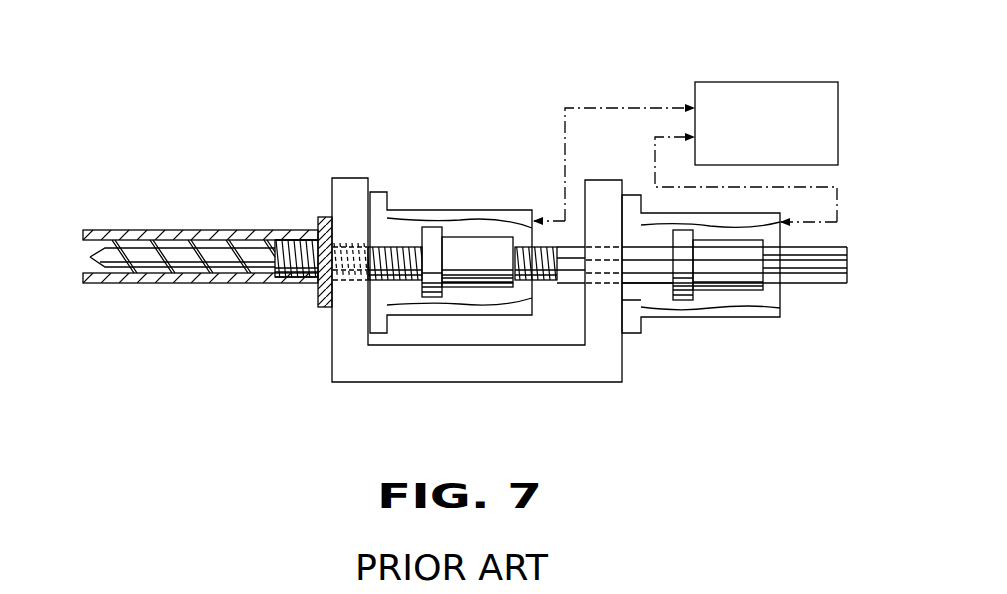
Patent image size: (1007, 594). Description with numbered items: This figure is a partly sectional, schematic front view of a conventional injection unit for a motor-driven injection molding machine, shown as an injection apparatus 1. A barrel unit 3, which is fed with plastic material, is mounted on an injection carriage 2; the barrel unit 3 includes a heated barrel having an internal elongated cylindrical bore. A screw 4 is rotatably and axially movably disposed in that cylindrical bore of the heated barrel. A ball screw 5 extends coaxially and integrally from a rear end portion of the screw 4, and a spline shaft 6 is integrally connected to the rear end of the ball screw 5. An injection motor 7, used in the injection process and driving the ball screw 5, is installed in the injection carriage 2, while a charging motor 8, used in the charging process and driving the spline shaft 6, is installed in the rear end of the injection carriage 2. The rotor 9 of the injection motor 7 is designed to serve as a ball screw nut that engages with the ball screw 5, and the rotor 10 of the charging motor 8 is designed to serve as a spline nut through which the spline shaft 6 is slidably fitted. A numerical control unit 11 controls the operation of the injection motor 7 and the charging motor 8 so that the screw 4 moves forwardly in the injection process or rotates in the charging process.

The injection apparatus 1 is at (134, 304).
The injection carriage 2 is at (470, 382).
The barrel unit 3 is at (193, 287).
The screw 4 is at (137, 253).
The ball screw 5 is at (293, 247).
The spline shaft 6 is at (657, 283).
The injection motor 7 is at (447, 210).
The charging motor 8 is at (712, 318).
The rotor 9 is at (488, 237).
The rotor 10 is at (740, 292).
The numerical control unit 11 is at (768, 82).